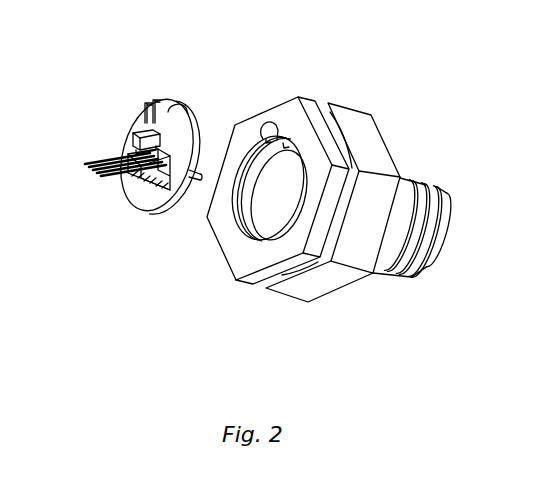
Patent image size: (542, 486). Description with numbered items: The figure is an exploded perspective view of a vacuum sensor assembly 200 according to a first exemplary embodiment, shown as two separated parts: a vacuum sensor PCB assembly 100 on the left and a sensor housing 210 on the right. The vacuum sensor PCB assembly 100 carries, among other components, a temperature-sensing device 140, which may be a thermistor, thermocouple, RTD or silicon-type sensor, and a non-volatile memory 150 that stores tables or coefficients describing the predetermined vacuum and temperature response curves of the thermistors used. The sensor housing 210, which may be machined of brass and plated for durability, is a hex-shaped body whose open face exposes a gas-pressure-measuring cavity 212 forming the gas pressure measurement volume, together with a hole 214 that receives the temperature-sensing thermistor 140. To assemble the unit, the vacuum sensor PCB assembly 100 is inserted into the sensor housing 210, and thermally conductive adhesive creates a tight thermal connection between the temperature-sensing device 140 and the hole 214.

The vacuum sensor PCB assembly 100 is at (113, 225).
The temperature-sensing device 140 is at (184, 97).
The non-volatile memory 150 is at (141, 134).
The vacuum sensor assembly 200 is at (312, 212).
The sensor housing 210 is at (368, 133).
The gas-pressure-measuring cavity 212 is at (284, 193).
The hole 214 is at (289, 147).